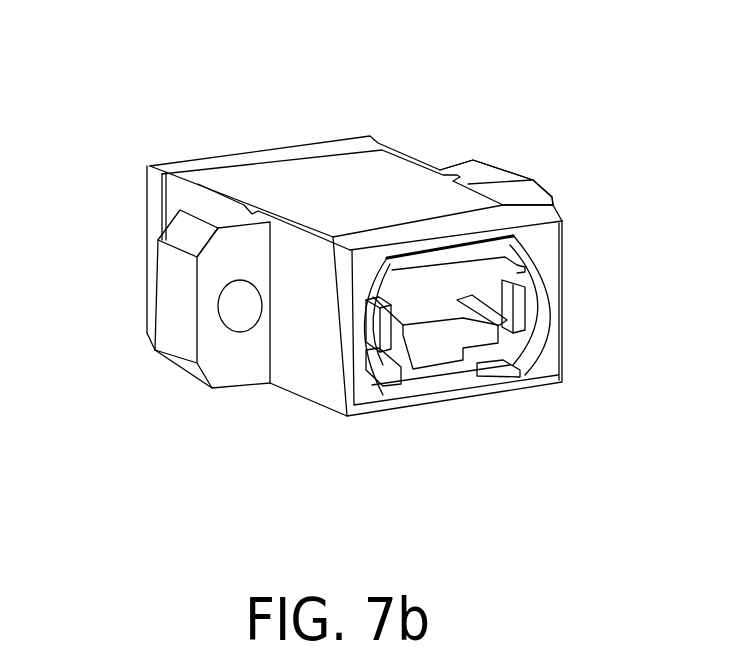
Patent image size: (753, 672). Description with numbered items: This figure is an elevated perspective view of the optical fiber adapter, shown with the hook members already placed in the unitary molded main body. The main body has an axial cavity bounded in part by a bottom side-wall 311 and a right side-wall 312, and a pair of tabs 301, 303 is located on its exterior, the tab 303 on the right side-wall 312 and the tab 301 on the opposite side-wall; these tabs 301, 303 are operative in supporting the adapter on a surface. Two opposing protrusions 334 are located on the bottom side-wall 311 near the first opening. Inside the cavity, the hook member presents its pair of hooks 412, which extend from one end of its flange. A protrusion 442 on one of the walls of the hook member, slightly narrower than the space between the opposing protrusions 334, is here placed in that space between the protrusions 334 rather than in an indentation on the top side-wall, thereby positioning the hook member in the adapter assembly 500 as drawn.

The connector housing 500 is at (357, 177).
The tab 301 is at (495, 172).
The tab 303 is at (177, 310).
The right side-wall 312 is at (320, 358).
The bottom side-wall 311 is at (512, 387).
The hooks 412 is at (517, 303).
The protrusions 334 is at (385, 382).
The protrusion 442 is at (437, 373).